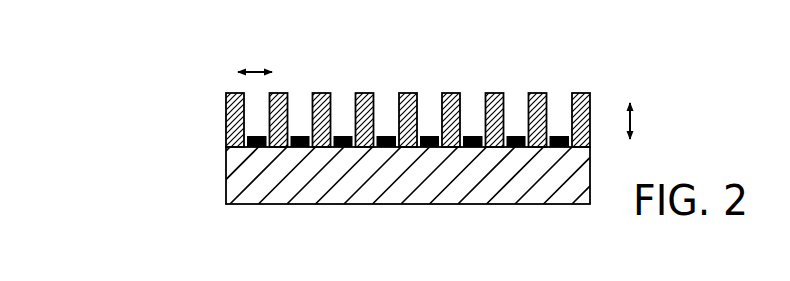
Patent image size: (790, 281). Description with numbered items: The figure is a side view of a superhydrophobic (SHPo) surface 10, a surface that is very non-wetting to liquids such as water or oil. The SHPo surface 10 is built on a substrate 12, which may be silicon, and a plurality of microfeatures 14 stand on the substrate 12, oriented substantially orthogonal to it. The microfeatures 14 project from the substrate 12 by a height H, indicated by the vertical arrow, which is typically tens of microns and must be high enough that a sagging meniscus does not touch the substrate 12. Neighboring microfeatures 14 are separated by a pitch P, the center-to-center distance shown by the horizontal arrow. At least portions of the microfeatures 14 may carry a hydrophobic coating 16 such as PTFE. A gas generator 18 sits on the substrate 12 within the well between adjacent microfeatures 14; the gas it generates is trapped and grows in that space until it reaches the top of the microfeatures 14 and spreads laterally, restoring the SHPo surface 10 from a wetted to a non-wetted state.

The superhydrophobic (SHPo) surface 10 is at (124, 157).
The substrate 12 is at (226, 146).
The microfeatures 14 is at (581, 92).
The hydrophobic coating 16 is at (360, 92).
The gas generator 18 is at (302, 142).
The pitch P is at (257, 70).
The height H is at (633, 125).